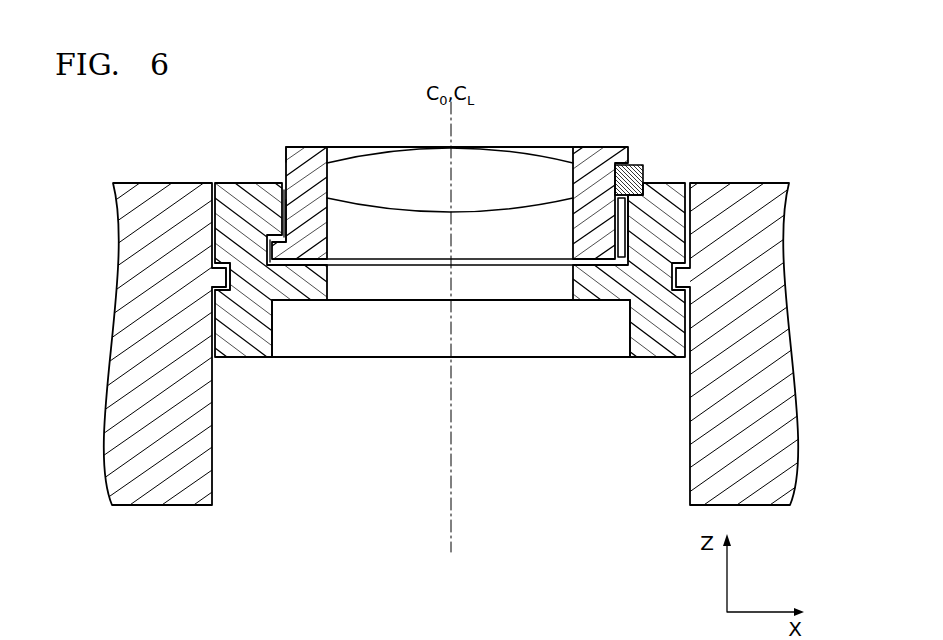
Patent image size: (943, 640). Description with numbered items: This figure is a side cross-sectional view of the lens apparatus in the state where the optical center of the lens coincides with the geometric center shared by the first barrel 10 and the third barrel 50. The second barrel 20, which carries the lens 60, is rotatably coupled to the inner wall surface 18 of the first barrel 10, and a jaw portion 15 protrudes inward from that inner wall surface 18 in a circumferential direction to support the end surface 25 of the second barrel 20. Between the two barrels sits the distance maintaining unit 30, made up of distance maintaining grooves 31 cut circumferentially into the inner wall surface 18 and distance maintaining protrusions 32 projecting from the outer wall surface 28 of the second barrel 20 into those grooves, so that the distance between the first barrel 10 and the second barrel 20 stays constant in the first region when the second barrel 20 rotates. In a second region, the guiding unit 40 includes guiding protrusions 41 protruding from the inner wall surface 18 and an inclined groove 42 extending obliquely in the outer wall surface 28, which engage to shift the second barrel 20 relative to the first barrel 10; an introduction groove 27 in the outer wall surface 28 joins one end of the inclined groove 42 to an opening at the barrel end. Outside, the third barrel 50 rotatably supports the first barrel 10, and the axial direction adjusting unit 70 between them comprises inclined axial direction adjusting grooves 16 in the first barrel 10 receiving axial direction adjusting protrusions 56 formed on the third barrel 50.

The first barrel 10 is at (240, 368).
The jaw portion 15 is at (292, 292).
The axial direction adjusting grooves 16 is at (230, 263).
The inner wall surface 18 is at (292, 213).
The second barrel 20 is at (303, 146).
The end surface 25 is at (307, 264).
The introduction groove 27 is at (622, 218).
The outer wall surface 28 is at (286, 156).
The distance maintaining unit 30 is at (282, 128).
The distance maintaining grooves 31 is at (283, 250).
The distance maintaining protrusions 32 is at (270, 240).
The guiding unit 40 is at (640, 82).
The guiding protrusions 41 is at (630, 197).
The inclined groove 42 is at (640, 167).
The third barrel 50 is at (157, 517).
The axial direction adjusting protrusions 56 is at (218, 276).
The lens 60 is at (513, 166).
The axial direction adjusting unit 70 is at (213, 128).